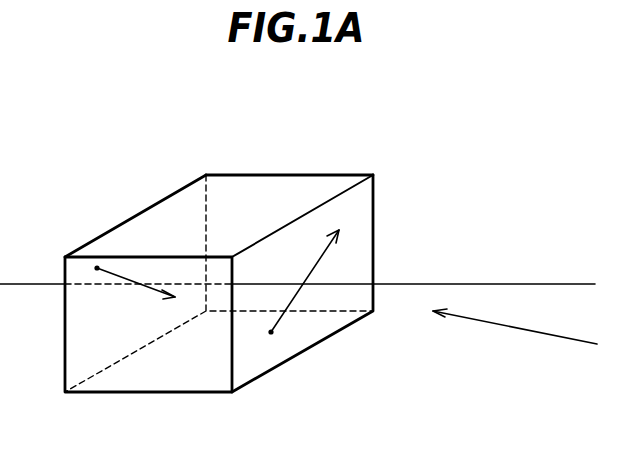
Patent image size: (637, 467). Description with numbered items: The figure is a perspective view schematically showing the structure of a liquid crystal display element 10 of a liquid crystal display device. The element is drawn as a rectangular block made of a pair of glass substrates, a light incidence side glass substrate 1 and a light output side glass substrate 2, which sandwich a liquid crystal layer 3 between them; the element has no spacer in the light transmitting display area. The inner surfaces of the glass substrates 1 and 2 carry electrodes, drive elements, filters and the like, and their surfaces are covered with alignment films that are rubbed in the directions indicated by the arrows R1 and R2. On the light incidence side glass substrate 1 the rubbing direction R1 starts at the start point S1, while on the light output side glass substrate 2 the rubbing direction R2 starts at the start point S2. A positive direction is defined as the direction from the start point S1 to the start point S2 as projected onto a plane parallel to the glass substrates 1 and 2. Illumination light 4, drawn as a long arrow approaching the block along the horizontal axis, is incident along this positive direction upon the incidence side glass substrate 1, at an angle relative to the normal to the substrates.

The optical element 10 is at (357, 110).
The glass substrate 1 is at (334, 197).
The glass substrate 2 is at (172, 195).
The liquid crystal layer 3 is at (255, 197).
The illumination light 4 is at (514, 329).
The start point S1 is at (271, 335).
The start point S2 is at (97, 265).
The rubbing direction R1 is at (323, 255).
The rubbing direction R2 is at (148, 297).